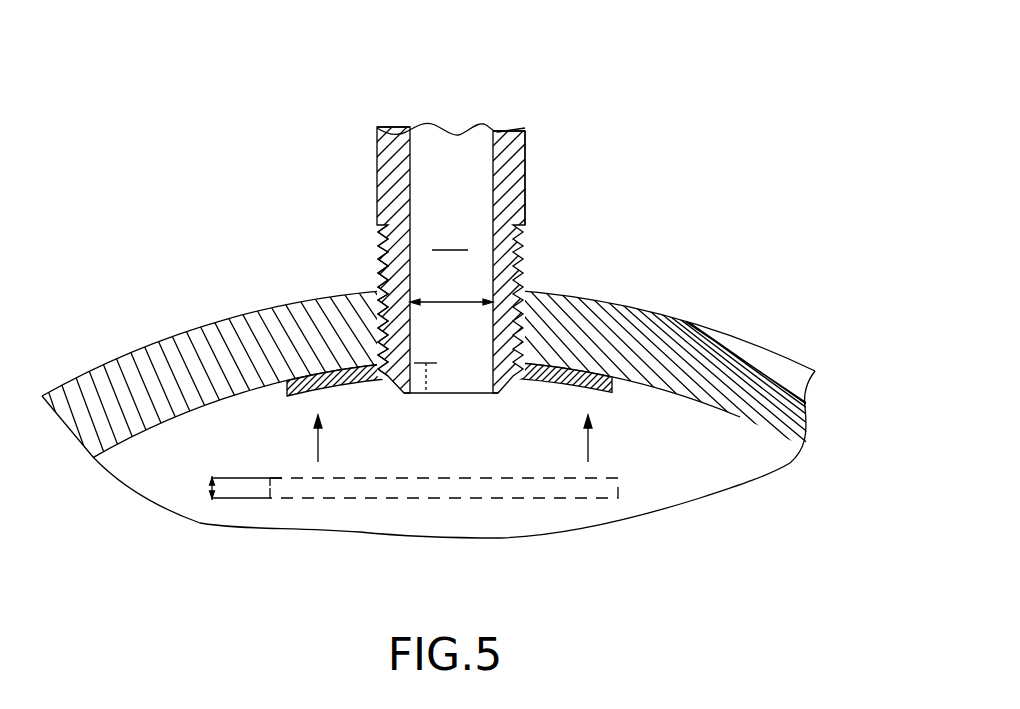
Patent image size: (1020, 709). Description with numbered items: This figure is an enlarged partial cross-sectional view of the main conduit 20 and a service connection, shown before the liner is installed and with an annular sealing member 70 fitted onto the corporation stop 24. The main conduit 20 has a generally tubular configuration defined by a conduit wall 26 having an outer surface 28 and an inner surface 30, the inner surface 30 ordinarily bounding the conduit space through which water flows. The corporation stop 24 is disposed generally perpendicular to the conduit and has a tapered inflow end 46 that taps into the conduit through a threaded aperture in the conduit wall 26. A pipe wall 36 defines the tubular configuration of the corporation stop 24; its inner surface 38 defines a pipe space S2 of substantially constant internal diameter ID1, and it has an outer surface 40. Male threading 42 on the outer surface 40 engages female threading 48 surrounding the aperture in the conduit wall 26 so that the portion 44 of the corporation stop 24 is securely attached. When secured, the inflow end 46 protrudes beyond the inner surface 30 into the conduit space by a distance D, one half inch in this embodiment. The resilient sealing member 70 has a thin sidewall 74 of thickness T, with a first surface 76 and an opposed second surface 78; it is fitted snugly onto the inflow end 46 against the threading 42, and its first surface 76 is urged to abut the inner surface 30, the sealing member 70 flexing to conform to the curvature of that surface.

The main conduit 20 is at (158, 170).
The corporation stop 24 is at (527, 178).
The conduit wall 26 is at (770, 365).
The outer surface 28 is at (717, 327).
The inner surface 30 is at (737, 418).
The pipe wall 36 is at (378, 150).
The inner surface 38 is at (411, 152).
The outer surface 40 is at (527, 215).
The male threading 42 is at (382, 296).
The portion 44 is at (520, 322).
The inflow end 46 is at (395, 388).
The female threading 48 is at (378, 304).
The sealing member 70 is at (562, 509).
The sidewall 74 is at (273, 500).
The first surface 76 is at (280, 476).
The second surface 78 is at (353, 500).
The thickness T is at (212, 488).
The pipe space S2 is at (450, 234).
The internal diameter ID1 is at (451, 322).
The distance D is at (438, 378).